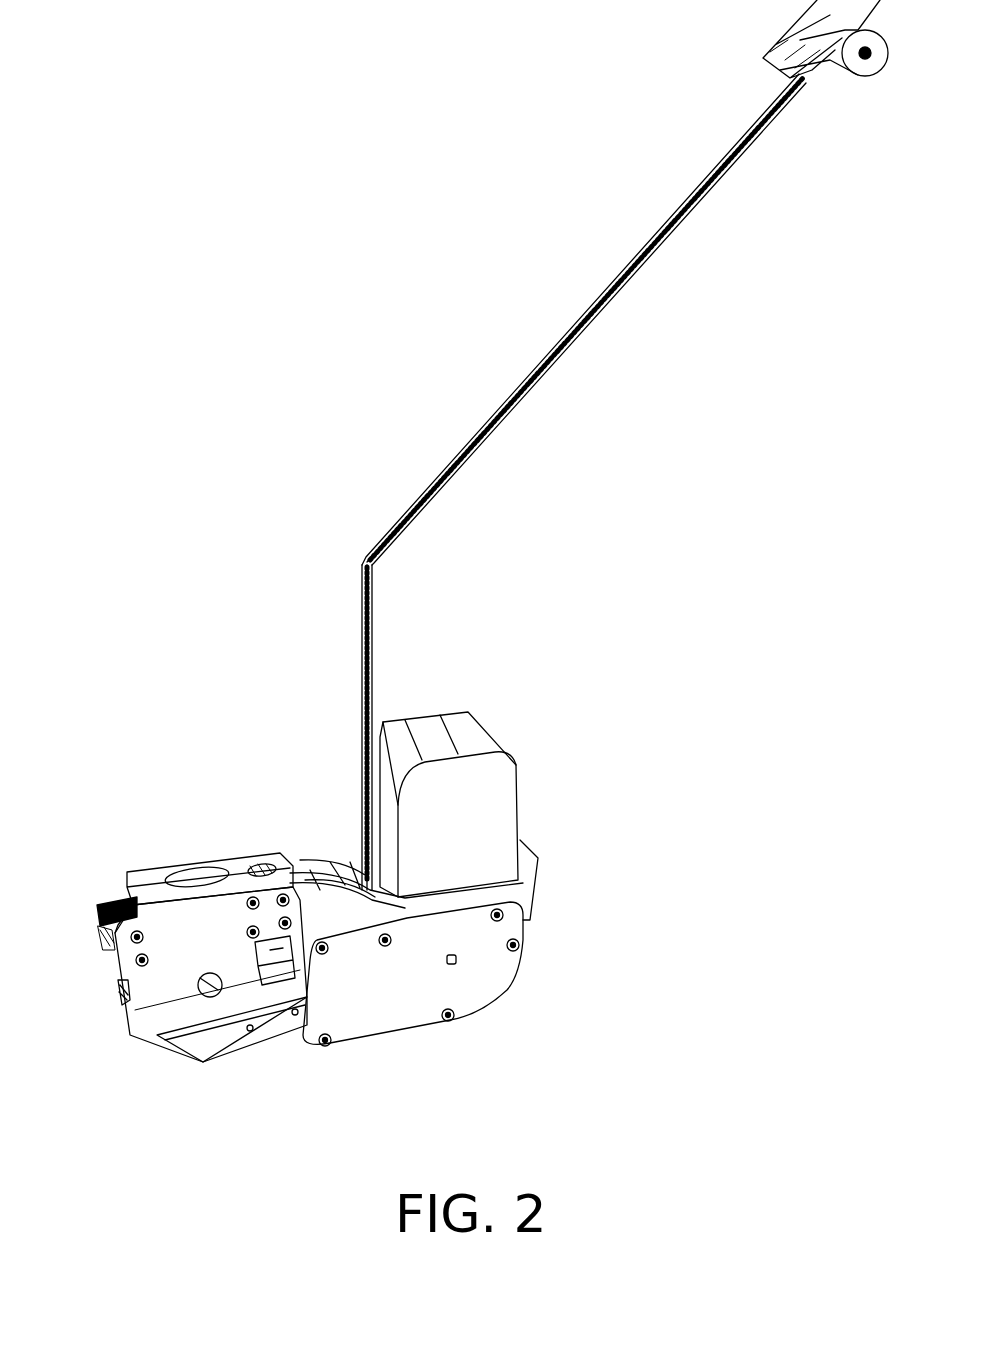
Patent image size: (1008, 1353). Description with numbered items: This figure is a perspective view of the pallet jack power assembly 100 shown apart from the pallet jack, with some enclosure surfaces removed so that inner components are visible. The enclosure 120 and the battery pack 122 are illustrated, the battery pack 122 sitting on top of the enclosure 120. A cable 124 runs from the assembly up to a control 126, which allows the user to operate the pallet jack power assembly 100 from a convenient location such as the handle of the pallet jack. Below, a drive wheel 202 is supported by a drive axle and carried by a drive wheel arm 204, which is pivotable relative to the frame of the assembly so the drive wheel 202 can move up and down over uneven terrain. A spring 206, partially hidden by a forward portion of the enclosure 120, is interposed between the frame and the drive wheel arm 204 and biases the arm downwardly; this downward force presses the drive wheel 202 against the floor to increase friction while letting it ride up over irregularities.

The pallet jack power assembly 100 is at (232, 386).
The enclosure 120 is at (507, 992).
The battery pack 122 is at (465, 722).
The cable 124 is at (447, 472).
The control 126 is at (853, 80).
The drive wheel 202 is at (205, 1062).
The drive wheel arm 204 is at (252, 1043).
The spring 206 is at (126, 990).